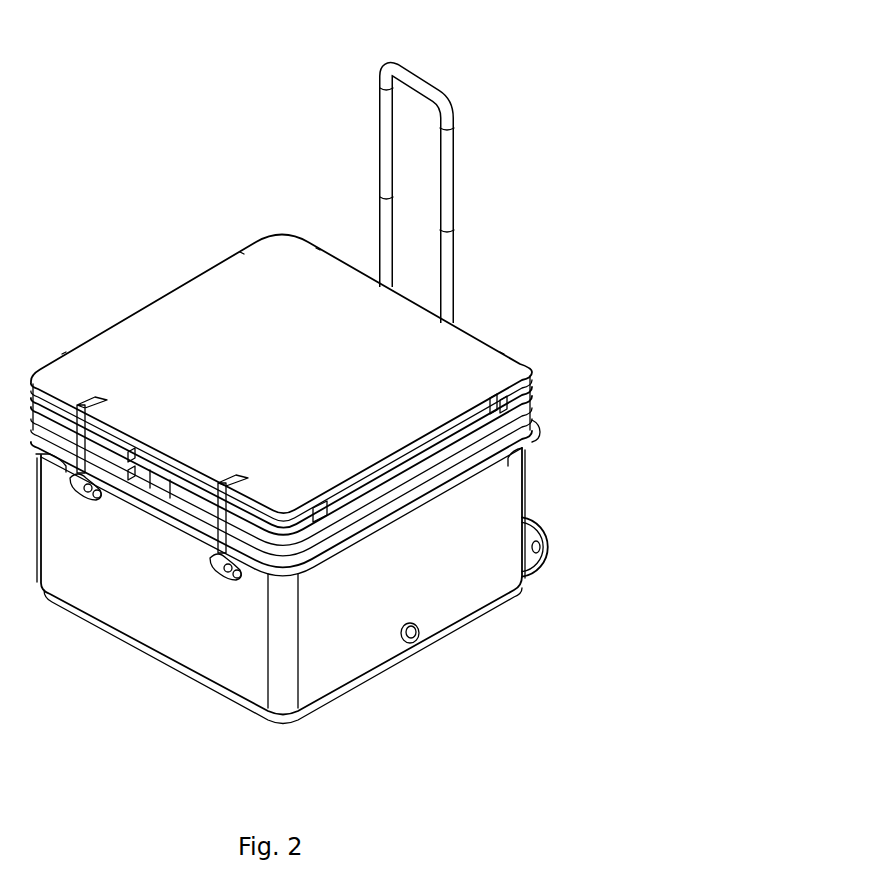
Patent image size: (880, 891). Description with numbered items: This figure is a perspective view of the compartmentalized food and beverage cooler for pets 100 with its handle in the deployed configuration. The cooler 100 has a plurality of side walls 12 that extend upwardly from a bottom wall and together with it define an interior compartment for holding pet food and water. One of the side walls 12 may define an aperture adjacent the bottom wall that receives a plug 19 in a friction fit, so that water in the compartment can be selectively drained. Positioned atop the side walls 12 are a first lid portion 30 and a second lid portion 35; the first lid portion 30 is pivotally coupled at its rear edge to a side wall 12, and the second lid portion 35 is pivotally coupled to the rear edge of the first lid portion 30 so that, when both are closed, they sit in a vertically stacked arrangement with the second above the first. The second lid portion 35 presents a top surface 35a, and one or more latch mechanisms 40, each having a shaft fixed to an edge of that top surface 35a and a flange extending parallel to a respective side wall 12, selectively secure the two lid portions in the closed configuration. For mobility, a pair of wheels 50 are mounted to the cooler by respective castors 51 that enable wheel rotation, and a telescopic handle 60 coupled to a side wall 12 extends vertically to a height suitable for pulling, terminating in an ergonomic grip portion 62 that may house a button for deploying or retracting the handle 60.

The food and beverage cooler for pets 100 is at (112, 283).
The side walls 12 is at (160, 588).
The plug 19 is at (415, 645).
The first lid portion 30 is at (517, 421).
The second lid portion 35 is at (497, 400).
The top surface 35a is at (316, 391).
The latch mechanisms 40 is at (216, 595).
The wheels 50 is at (533, 520).
The castors 51 is at (538, 562).
The handle 60 is at (456, 191).
The grip portion 62 is at (427, 85).